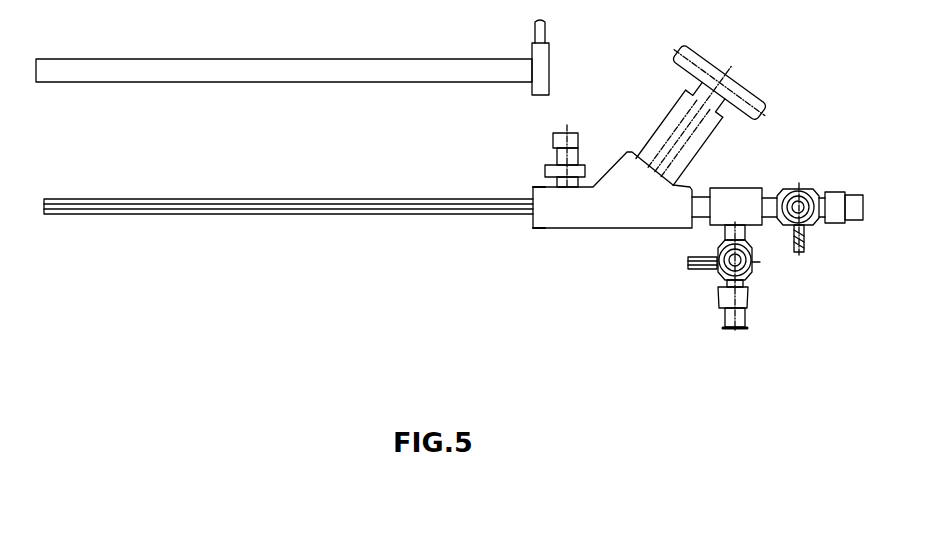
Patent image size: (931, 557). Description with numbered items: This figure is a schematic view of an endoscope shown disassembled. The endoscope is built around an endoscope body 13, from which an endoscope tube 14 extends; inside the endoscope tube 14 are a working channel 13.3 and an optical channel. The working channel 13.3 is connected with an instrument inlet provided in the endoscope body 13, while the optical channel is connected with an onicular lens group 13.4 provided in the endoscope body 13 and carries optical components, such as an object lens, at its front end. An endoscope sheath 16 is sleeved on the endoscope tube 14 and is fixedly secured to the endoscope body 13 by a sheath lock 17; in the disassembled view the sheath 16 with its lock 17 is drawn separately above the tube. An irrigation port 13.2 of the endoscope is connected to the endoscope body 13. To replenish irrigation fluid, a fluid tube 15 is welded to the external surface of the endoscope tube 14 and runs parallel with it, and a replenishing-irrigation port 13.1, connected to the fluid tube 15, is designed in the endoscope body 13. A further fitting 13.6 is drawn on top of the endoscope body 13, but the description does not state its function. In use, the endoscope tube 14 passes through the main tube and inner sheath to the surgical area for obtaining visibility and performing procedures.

The endoscope body 13 is at (622, 208).
The replenishing-irrigation port 13.1 is at (715, 278).
The irrigation port 13.2 is at (805, 232).
The working channel 13.3 is at (855, 200).
The onicular lens group 13.4 is at (702, 112).
The top fitting 13.6 is at (575, 140).
The endoscope tube 14 is at (272, 216).
The fluid tube 15 is at (192, 200).
The endoscope sheath 16 is at (372, 70).
The sheath lock 17 is at (543, 62).